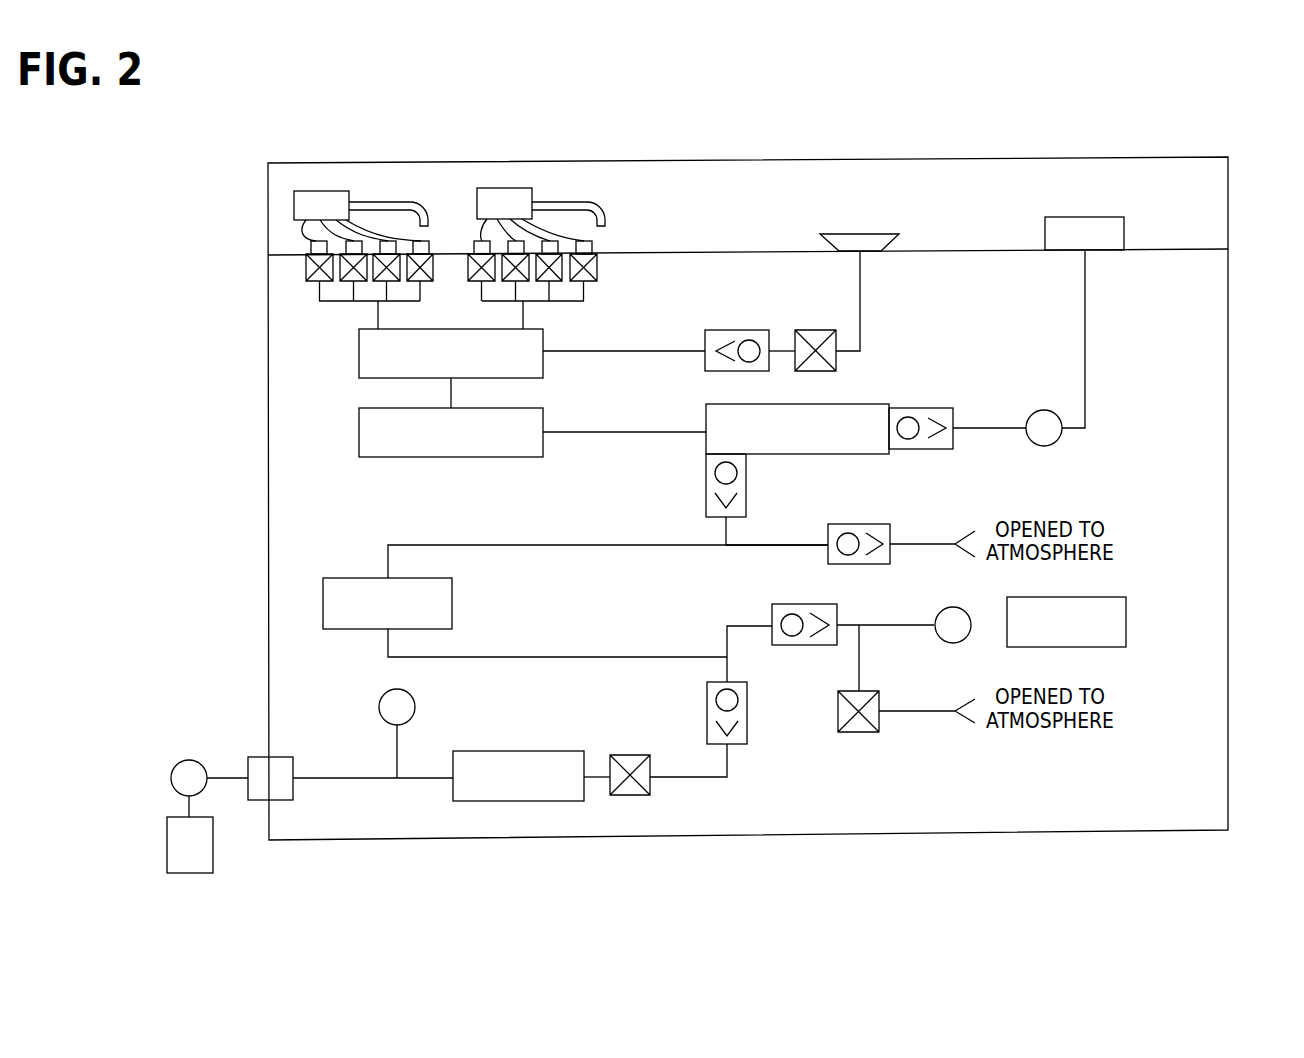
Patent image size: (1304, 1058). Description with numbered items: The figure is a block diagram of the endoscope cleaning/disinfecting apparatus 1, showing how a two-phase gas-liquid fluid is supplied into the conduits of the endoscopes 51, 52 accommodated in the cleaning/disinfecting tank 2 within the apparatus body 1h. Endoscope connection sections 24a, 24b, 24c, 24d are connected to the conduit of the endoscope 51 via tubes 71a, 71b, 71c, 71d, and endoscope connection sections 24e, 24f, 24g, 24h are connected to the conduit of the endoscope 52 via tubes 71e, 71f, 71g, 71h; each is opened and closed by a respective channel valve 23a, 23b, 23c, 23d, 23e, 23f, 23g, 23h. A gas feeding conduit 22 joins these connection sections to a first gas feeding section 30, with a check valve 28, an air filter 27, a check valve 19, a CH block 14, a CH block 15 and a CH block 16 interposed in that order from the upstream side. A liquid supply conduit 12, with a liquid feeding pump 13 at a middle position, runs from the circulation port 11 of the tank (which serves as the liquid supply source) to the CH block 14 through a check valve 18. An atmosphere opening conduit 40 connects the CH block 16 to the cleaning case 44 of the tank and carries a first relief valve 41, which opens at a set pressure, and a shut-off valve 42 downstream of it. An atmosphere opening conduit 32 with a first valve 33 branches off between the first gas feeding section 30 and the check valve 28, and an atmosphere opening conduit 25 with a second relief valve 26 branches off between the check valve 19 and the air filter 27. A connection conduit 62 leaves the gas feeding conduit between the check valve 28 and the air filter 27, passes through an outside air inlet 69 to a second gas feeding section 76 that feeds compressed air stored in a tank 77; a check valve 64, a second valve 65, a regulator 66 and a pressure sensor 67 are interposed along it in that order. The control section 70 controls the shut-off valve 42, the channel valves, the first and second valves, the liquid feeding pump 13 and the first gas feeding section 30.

The endoscope cleaning/disinfecting apparatus 1 is at (1185, 120).
The apparatus body 1h is at (1228, 446).
The cleaning/disinfecting tank 2 is at (997, 182).
The circulation port 11 is at (1085, 217).
The liquid supply conduit 12 is at (1085, 318).
The liquid feeding pump 13 is at (1043, 410).
The CH block 14 is at (868, 404).
The CH block 15 is at (359, 432).
The CH block 16 is at (359, 356).
The check valve 18 is at (922, 408).
The check valve 19 is at (706, 490).
The gas feeding conduit 22 is at (487, 545).
The channel valve 23a is at (307, 270).
The channel valve 23b is at (347, 273).
The channel valve 23c is at (380, 275).
The channel valve 23d is at (428, 267).
The channel valve 23e is at (470, 262).
The channel valve 23f is at (513, 273).
The channel valve 23g is at (558, 273).
The channel valve 23h is at (597, 265).
The endoscope connection section 24a is at (313, 248).
The endoscope connection section 24b is at (357, 241).
The endoscope connection section 24c is at (390, 241).
The endoscope connection section 24d is at (425, 241).
The endoscope connection section 24e is at (478, 241).
The endoscope connection section 24f is at (512, 241).
The endoscope connection section 24g is at (552, 241).
The endoscope connection section 24h is at (582, 241).
The atmosphere opening conduit 25 is at (795, 543).
The second relief valve 26 is at (860, 524).
The air filter 27 is at (360, 578).
The check valve 28 is at (805, 604).
The first gas feeding section 30 is at (953, 607).
The atmosphere opening conduit 32 is at (860, 655).
The first valve 33 is at (858, 732).
The atmosphere opening conduit 40 is at (676, 348).
The first relief valve 41 is at (740, 330).
The shut-off valve 42 is at (816, 330).
The cleaning case 44 is at (860, 234).
The endoscope 51 is at (323, 203).
The endoscope 52 is at (523, 197).
The connection conduit 62 is at (432, 776).
The check valve 64 is at (747, 712).
The second valve 65 is at (630, 755).
The regulator 66 is at (523, 751).
The pressure sensor 67 is at (415, 707).
The outside air inlet 69 is at (283, 757).
The control section 70 is at (1126, 620).
The tube 71a is at (303, 237).
The tube 71b is at (302, 230).
The tube 71c is at (368, 230).
The tube 71d is at (417, 228).
The tube 71e is at (480, 235).
The tube 71f is at (510, 235).
The tube 71g is at (553, 232).
The tube 71h is at (600, 223).
The second gas feeding section 76 is at (190, 760).
The tank 77 is at (167, 848).